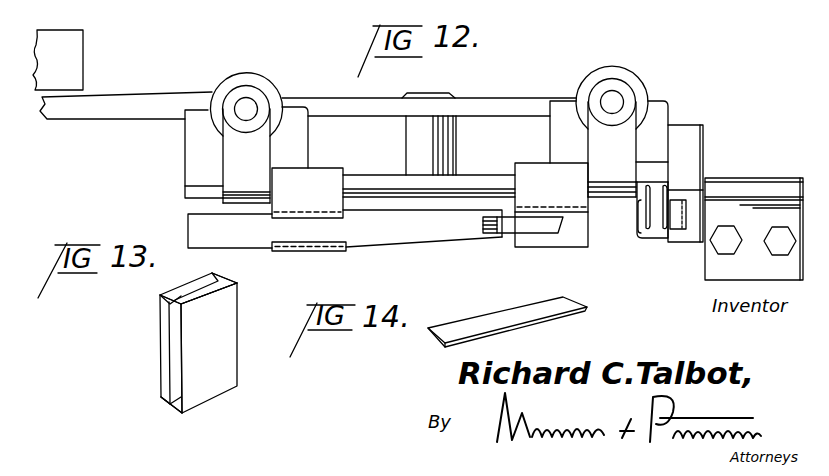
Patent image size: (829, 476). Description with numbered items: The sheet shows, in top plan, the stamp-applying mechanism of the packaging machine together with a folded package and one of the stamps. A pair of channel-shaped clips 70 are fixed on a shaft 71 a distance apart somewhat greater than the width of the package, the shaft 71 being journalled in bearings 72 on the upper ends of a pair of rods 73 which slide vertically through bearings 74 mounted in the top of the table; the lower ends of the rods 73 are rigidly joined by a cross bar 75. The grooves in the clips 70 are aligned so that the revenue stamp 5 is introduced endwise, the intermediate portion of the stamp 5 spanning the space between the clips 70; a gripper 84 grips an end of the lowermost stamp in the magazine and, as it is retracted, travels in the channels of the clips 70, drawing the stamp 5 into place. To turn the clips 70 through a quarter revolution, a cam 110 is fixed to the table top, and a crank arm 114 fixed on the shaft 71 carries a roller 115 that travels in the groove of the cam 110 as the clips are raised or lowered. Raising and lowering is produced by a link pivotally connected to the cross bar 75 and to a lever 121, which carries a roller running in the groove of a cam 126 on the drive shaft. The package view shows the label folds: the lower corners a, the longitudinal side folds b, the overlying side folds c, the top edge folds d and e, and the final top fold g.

In FIG. 12, the cam 126 is at (80, 67).
In FIG. 12, the lever 121 is at (130, 100).
In FIG. 12, the cross bar 75 is at (495, 102).
In FIG. 12, the shaft 71 is at (467, 180).
In FIG. 12, the bearings 74 is at (272, 83).
In FIG. 12, the rods 73 is at (246, 109).
In FIG. 12, the bearings 72 is at (228, 162).
In FIG. 12, the clips 70 is at (302, 248).
In FIG. 12, the revenue stamp 5 is at (396, 244).
In FIG. 14, the revenue stamp 5 is at (440, 334).
In FIG. 12, the gripper 84 is at (495, 226).
In FIG. 12, the cam 110 is at (695, 155).
In FIG. 12, the crank arm 114 is at (653, 175).
In FIG. 12, the roller 115 is at (678, 214).
In FIG. 13, the lower corners a is at (172, 398).
In FIG. 13, the longitudinal side folds b is at (167, 365).
In FIG. 13, the folds c is at (177, 357).
In FIG. 13, the edge fold d is at (178, 300).
In FIG. 13, the edge fold e is at (216, 287).
In FIG. 13, the final fold g is at (205, 293).